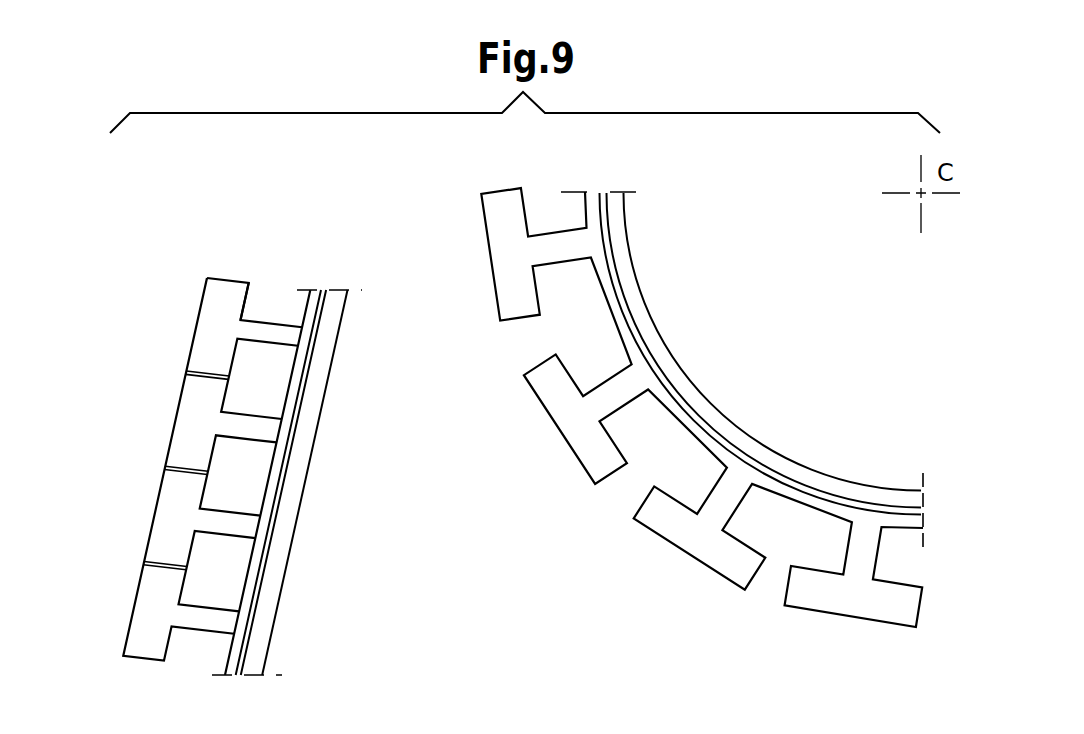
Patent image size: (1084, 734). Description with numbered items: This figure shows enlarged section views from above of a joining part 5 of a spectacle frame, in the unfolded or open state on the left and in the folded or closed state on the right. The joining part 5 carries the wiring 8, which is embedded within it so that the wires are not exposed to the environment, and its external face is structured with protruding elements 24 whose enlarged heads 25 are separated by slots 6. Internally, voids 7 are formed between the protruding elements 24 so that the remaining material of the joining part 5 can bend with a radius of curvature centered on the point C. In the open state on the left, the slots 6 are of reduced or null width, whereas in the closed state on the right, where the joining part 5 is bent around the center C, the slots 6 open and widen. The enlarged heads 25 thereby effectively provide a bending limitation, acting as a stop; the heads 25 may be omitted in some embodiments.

The protruding elements 24 is at (192, 329).
The enlarged heads 25 is at (223, 295).
The slots 6 is at (157, 466).
The voids 7 is at (253, 477).
The wiring 8 is at (253, 628).
The joining part 5 is at (315, 545).